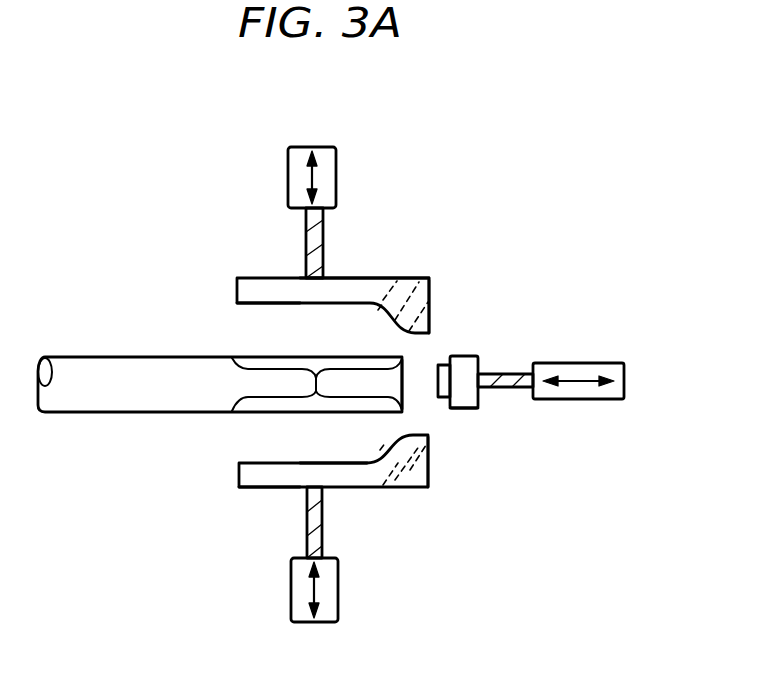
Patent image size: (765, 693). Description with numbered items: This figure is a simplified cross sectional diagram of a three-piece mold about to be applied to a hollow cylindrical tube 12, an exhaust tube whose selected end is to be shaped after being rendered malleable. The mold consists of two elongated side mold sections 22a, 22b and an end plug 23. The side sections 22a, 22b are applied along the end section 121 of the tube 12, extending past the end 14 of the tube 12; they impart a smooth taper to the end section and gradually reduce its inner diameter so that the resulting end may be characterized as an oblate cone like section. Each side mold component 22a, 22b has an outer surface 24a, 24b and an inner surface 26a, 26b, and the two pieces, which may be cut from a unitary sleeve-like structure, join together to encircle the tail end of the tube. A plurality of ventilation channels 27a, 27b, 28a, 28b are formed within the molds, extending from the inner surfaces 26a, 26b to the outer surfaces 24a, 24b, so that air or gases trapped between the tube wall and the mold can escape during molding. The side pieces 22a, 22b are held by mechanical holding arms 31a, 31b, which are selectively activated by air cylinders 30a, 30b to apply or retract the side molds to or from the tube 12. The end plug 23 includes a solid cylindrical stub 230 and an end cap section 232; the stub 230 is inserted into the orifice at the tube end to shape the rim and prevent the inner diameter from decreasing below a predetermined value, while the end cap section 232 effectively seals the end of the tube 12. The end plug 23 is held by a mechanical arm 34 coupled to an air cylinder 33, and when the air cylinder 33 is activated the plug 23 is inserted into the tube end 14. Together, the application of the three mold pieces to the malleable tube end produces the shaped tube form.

The hollow cylindrical tube 12 is at (82, 370).
The end section of tube 121 is at (316, 378).
The end of tube 14 is at (412, 373).
The side mold section 22a is at (260, 278).
The side mold section 22b is at (260, 478).
The outer surface of side mold 24a is at (335, 278).
The outer surface of side mold 24b is at (252, 463).
The inner surface of side mold 26a is at (249, 304).
The inner surface of side mold 26b is at (240, 470).
The ventilation channel 27a is at (412, 276).
The ventilation channel 27b is at (380, 490).
The ventilation channel 28a is at (432, 278).
The ventilation channel 28b is at (437, 493).
The air cylinder 30a is at (290, 165).
The air cylinder 30b is at (291, 600).
The mechanical holding arm 31a is at (305, 226).
The mechanical holding arm 31b is at (306, 524).
The end plug 23 is at (476, 355).
The solid cylindrical stub 230 is at (442, 405).
The end cap section 232 is at (468, 409).
The mechanical arm 34 is at (503, 374).
The air cylinder 33 is at (624, 379).